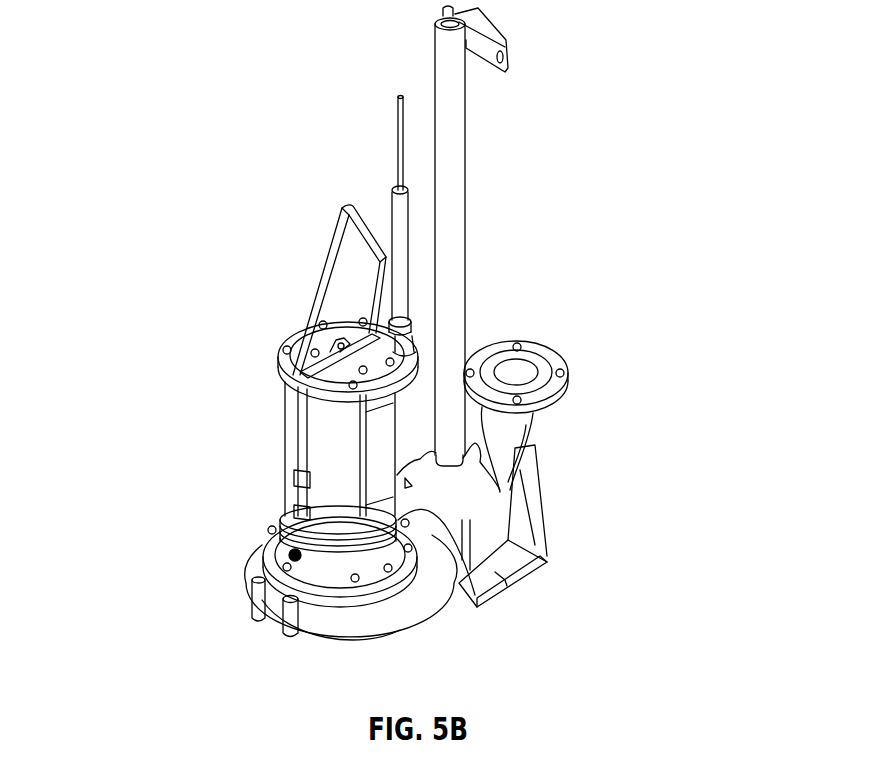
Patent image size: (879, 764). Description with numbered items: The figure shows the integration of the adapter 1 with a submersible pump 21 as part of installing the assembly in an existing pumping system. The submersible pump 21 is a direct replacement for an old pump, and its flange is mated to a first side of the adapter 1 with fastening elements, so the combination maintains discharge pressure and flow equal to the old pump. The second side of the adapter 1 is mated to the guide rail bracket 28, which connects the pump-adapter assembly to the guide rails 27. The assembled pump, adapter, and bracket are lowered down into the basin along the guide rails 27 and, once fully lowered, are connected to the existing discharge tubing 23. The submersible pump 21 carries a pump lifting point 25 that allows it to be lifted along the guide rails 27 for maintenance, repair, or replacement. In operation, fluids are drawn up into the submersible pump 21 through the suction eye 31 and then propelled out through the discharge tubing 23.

The adapter 1 is at (525, 568).
The submersible pump 21 is at (285, 515).
The discharge tubing 23 is at (518, 345).
The pump lifting point 25 is at (345, 208).
The guide rails 27 is at (435, 62).
The guide rail bracket 28 is at (530, 500).
The suction eye 31 is at (362, 628).